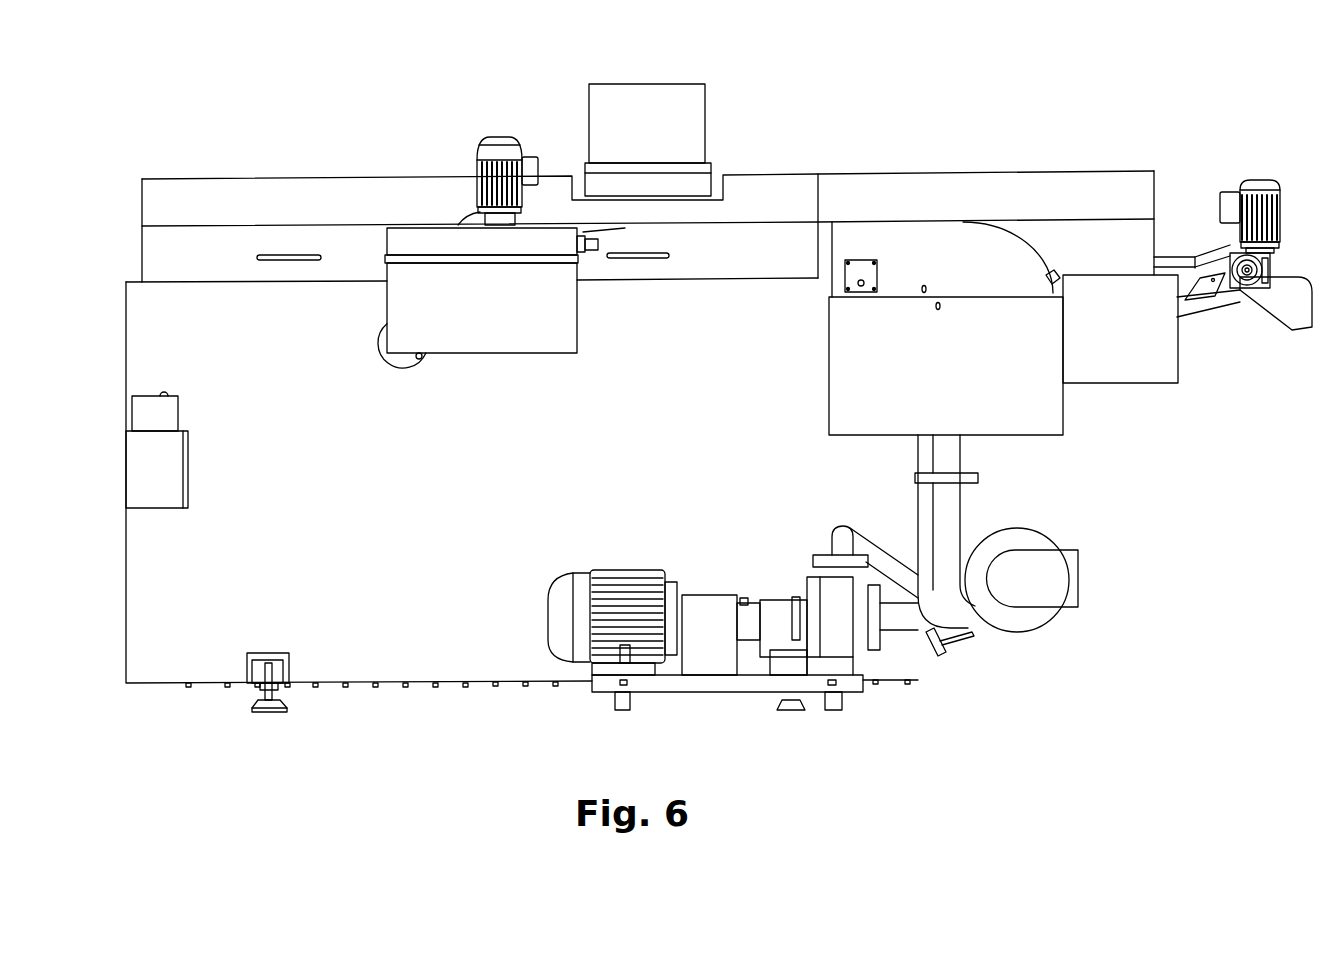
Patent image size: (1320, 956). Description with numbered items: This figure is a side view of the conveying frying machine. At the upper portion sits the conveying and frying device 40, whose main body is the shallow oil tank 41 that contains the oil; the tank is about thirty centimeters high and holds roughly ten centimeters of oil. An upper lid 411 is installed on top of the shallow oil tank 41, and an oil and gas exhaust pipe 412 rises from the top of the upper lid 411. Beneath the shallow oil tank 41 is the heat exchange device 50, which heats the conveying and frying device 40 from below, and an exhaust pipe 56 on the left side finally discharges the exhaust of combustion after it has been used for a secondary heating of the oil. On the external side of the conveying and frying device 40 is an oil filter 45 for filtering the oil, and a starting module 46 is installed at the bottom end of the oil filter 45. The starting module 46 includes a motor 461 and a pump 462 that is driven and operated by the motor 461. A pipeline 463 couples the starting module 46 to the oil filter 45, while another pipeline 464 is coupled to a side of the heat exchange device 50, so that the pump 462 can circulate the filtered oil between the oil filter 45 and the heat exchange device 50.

The conveying and frying device 40 is at (853, 168).
The shallow oil tank 41 is at (701, 255).
The upper lid 411 is at (950, 187).
The oil and gas exhaust pipe 412 is at (662, 105).
The oil filter 45 is at (1048, 400).
The starting module 46 is at (815, 597).
The motor 461 is at (588, 618).
The pump 462 is at (745, 640).
The pipeline 463 is at (957, 505).
The pipeline 464 is at (875, 550).
The heat exchange device 50 is at (408, 652).
The exhaust pipe 56 is at (155, 419).